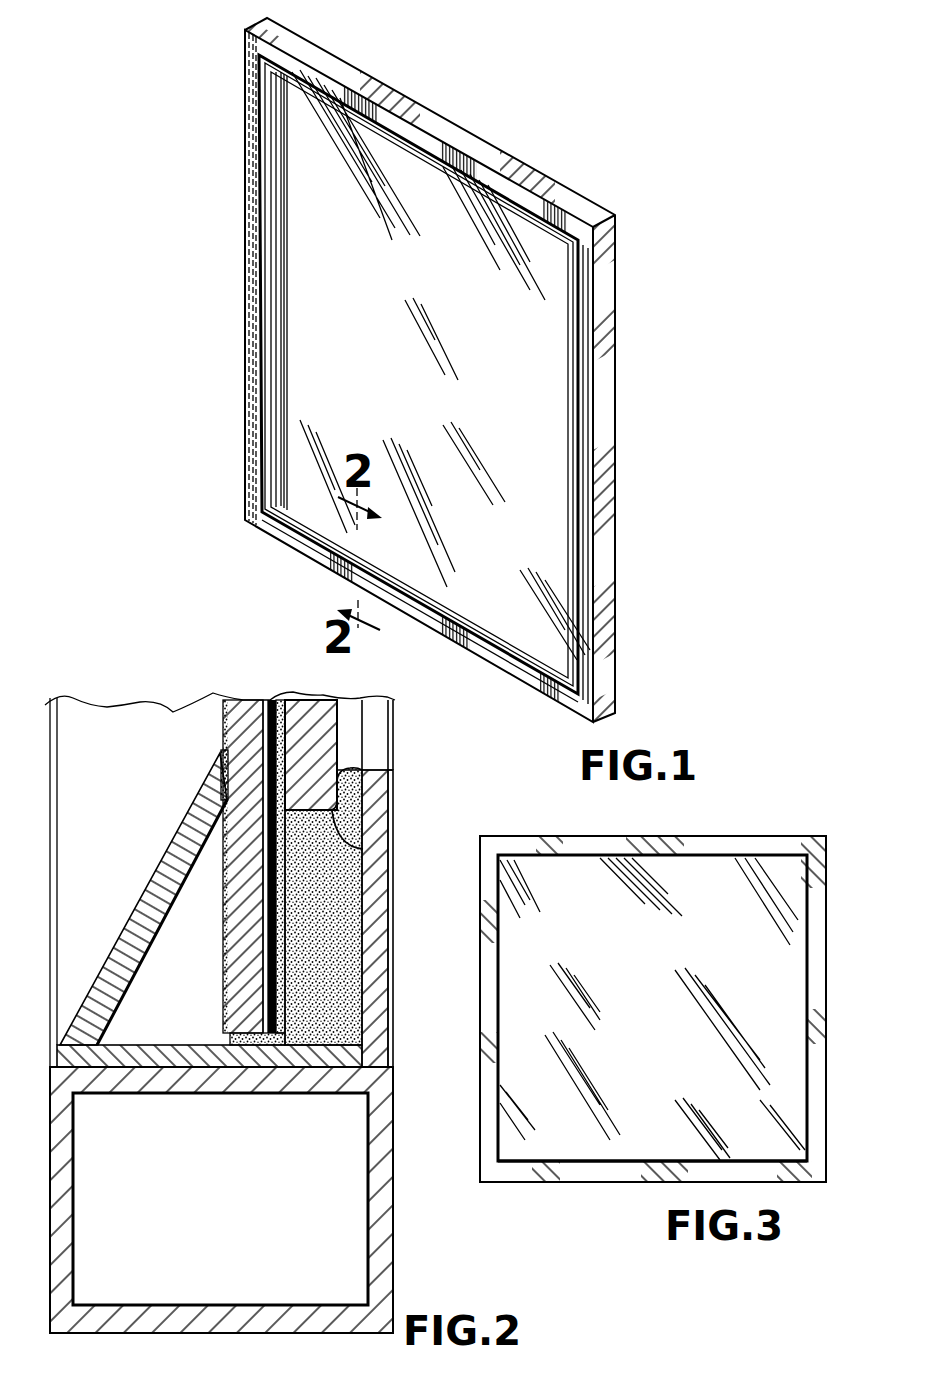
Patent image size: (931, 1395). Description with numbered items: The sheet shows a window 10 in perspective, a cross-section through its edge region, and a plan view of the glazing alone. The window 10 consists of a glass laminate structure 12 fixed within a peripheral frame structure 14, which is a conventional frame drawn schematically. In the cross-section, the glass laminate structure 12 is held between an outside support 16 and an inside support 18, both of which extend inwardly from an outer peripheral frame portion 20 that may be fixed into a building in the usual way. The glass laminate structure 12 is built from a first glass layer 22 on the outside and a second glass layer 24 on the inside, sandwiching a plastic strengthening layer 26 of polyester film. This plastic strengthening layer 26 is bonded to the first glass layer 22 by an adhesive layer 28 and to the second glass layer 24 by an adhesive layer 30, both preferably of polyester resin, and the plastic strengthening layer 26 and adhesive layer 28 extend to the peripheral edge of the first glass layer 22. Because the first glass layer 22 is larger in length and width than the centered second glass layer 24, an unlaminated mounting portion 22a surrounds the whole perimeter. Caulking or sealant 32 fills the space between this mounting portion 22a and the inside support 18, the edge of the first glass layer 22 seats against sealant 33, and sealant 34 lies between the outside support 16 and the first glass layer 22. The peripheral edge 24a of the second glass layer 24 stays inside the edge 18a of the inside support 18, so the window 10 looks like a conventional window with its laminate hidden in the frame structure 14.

In FIG. 1, the window 10 is at (611, 177).
In FIG. 1, the glass laminate structure 12 is at (325, 251).
In FIG. 2, the glass laminate structure 12 is at (278, 684).
In FIG. 3, the glass laminate structure 12 is at (808, 783).
In FIG. 1, the peripheral frame structure 14 is at (246, 483).
In FIG. 2, the peripheral frame structure 14 is at (396, 1103).
In FIG. 1, the outside support 16 is at (277, 517).
In FIG. 2, the outside support 16 is at (143, 900).
In FIG. 1, the inside support 18 is at (283, 340).
In FIG. 2, the inside support 18 is at (385, 825).
In FIG. 1, the edge of inside support 18a is at (290, 355).
In FIG. 2, the edge of inside support 18a is at (393, 772).
In FIG. 1, the outer peripheral frame portion 20 is at (613, 305).
In FIG. 2, the outer peripheral frame portion 20 is at (395, 1281).
In FIG. 2, the first glass layer 22 is at (243, 700).
In FIG. 3, the first glass layer 22 is at (742, 814).
In FIG. 2, the mounting portion 22a is at (233, 1010).
In FIG. 3, the mounting portion 22a is at (662, 835).
In FIG. 2, the second glass layer 24 is at (313, 700).
In FIG. 3, the second glass layer 24 is at (644, 1142).
In FIG. 2, the peripheral edge of inside glass layer 24a is at (362, 846).
In FIG. 3, the peripheral edge of inside glass layer 24a is at (581, 1165).
In FIG. 2, the plastic strengthening layer 26 is at (270, 730).
In FIG. 2, the adhesive layer 28 is at (270, 903).
In FIG. 2, the adhesive layer 30 is at (283, 750).
In FIG. 2, the caulking or sealant 32 is at (340, 947).
In FIG. 2, the silicone sealant or caulking 33 is at (243, 1042).
In FIG. 2, the sealant or caulking 34 is at (227, 775).